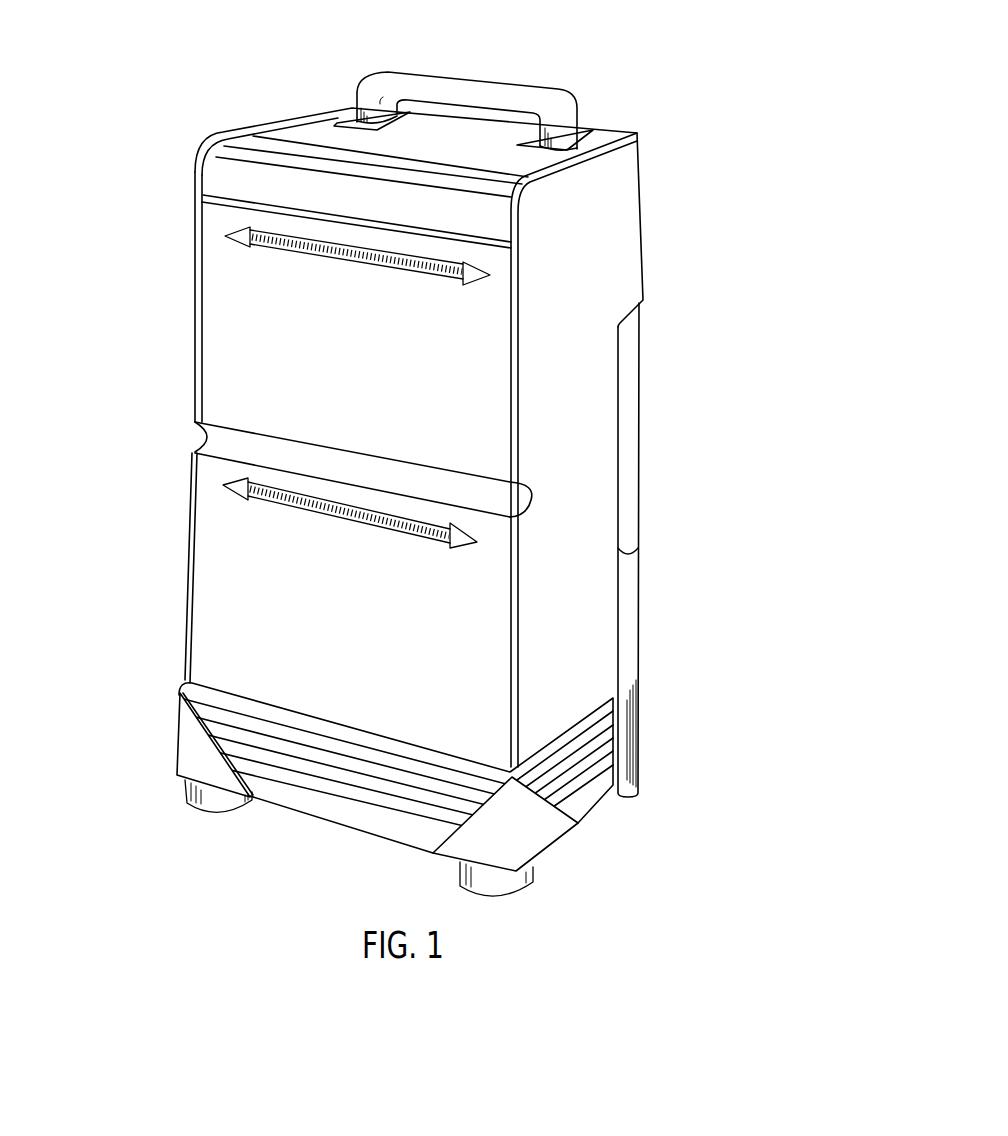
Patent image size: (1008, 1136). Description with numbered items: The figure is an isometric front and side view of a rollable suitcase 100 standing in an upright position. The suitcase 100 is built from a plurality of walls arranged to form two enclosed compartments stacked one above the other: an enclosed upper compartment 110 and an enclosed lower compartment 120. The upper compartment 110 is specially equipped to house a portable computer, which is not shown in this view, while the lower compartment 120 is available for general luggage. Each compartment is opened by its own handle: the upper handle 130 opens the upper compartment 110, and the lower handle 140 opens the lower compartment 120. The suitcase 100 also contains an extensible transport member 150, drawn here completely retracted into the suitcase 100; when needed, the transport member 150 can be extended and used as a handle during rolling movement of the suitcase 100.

The rollable suitcase 100 is at (465, 450).
The upper compartment 110 is at (252, 318).
The lower compartment 120 is at (303, 553).
The upper handle 130 is at (233, 237).
The lower handle 140 is at (228, 488).
The extensible transport member 150 is at (493, 82).